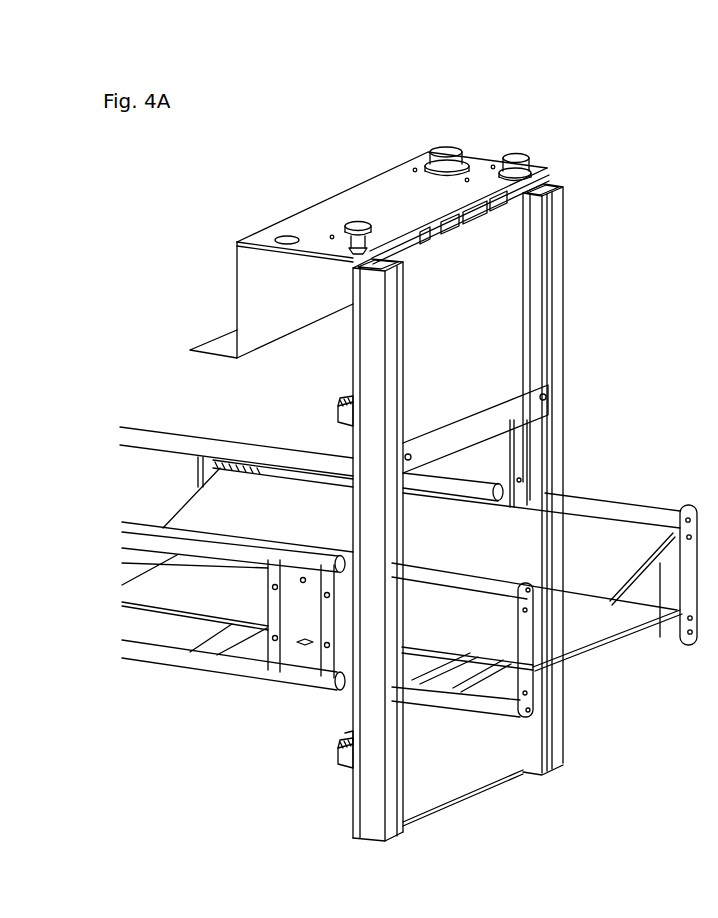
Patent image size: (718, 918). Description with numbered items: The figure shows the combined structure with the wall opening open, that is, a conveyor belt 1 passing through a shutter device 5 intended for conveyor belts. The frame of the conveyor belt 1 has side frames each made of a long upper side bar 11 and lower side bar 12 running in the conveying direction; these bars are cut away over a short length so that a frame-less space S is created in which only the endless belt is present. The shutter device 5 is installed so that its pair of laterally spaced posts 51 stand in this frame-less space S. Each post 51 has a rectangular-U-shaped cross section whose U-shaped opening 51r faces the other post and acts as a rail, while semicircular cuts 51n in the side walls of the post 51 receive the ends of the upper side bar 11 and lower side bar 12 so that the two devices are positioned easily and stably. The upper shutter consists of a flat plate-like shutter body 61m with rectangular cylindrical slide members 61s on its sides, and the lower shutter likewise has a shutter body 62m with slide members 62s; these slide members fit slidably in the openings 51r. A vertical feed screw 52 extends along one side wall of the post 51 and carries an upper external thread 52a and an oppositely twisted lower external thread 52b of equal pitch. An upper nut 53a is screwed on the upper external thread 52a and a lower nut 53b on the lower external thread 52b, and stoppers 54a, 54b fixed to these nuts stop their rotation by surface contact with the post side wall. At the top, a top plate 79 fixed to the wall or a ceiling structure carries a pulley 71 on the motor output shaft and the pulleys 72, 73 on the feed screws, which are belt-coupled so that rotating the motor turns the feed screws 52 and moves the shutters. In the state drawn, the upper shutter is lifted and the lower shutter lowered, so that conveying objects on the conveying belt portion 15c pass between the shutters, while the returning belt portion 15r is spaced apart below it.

The conveyor belt 1 is at (137, 383).
The shutter device 5 is at (576, 163).
The upper side bar 11 is at (186, 437).
The lower side bar 12 is at (196, 665).
The conveying belt portion 15c is at (645, 543).
The returning belt portion 15r is at (610, 628).
The post 51 is at (358, 370).
The semicircular cut 51n is at (556, 478).
The U-shaped opening 51r is at (540, 249).
The feed screw 52 is at (348, 502).
The upper external thread 52a is at (356, 325).
The lower external thread 52b is at (350, 628).
The upper nut 53a is at (350, 399).
The lower nut 53b is at (345, 750).
The stopper 54a is at (348, 424).
The stopper 54b is at (350, 769).
The slide member 61s is at (549, 216).
The shutter body 61m is at (504, 270).
The slide member 62s is at (556, 692).
The shutter body 62m is at (472, 763).
The pulley 71 is at (446, 152).
The pulley 72 is at (514, 154).
The pulley 73 is at (356, 222).
The top plate 79 is at (388, 185).
The frame-less space S is at (342, 706).